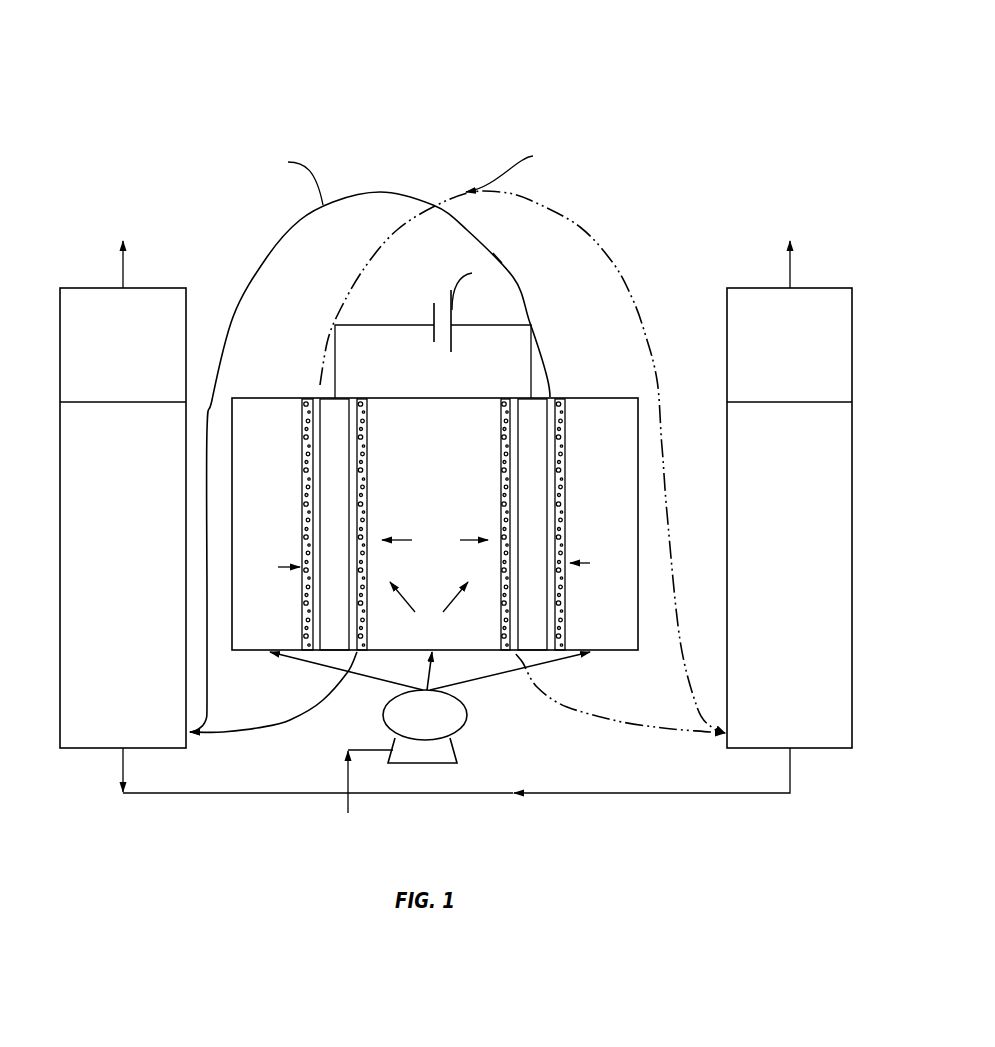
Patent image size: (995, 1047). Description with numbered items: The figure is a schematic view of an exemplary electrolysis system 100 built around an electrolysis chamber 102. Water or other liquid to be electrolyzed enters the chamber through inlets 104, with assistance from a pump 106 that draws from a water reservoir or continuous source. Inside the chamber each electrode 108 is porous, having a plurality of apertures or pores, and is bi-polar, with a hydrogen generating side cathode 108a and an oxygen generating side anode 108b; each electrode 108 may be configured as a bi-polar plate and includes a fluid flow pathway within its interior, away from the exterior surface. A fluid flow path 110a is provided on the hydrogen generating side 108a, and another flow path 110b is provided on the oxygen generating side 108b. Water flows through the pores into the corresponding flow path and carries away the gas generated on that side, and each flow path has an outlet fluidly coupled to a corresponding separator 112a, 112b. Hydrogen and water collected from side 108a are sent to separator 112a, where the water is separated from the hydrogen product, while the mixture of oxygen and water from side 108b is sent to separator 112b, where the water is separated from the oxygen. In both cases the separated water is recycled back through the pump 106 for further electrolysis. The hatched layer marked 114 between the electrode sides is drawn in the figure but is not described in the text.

The system 100 is at (655, 68).
The electrolysis chamber 102 is at (628, 387).
The inlets 104 is at (287, 660).
The pump 106 is at (439, 724).
The electrode 108 is at (434, 501).
The hydrogen generating side cathode 108a is at (367, 428).
The oxygen generating side anode 108b is at (305, 503).
The fluid flow path 110a is at (548, 396).
The flow path 110b is at (318, 396).
The separator 112a is at (140, 518).
The separator 112b is at (807, 518).
The membrane 114 is at (345, 397).